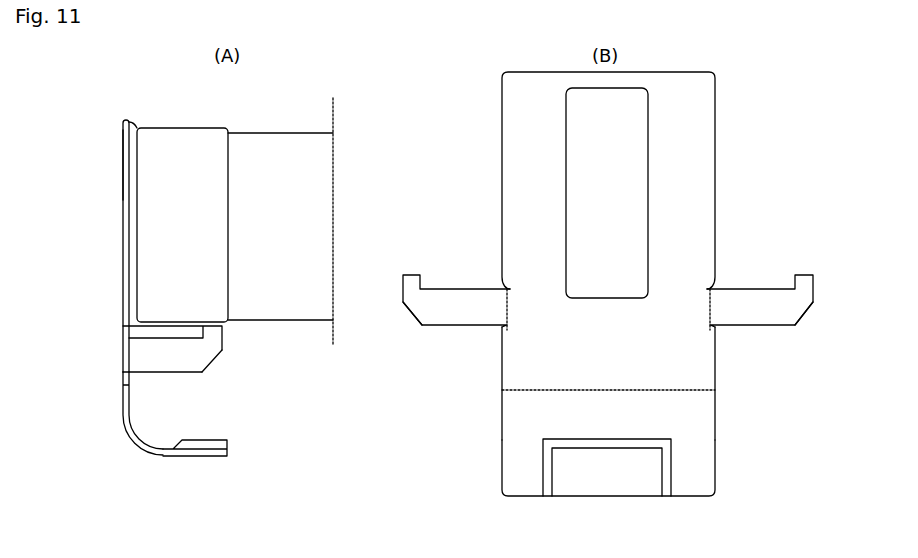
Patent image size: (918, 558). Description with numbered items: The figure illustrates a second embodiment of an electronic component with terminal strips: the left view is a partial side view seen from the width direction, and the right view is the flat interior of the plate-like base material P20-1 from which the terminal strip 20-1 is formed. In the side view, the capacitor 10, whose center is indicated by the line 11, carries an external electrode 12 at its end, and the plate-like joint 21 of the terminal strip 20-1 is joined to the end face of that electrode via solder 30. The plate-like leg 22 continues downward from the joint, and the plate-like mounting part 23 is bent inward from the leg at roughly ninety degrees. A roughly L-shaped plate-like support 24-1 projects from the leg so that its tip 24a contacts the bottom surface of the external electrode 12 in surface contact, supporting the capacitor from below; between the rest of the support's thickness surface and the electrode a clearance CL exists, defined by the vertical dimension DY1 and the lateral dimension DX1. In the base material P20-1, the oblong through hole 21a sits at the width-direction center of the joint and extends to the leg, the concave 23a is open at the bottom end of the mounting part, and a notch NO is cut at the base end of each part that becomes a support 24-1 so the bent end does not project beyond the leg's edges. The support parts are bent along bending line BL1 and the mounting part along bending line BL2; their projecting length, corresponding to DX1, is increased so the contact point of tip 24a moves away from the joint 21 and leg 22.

The multilayer ceramic capacitor 10 is at (262, 133).
The center line of substrate 11 is at (308, 147).
The external electrode 12 is at (178, 138).
The terminal strip 20-1 is at (122, 165).
The plate-like base material P20-1 is at (501, 118).
The plate-like joint 21 is at (122, 222).
The oblong through hole 21a is at (640, 188).
The plate-like leg 22 is at (122, 400).
The plate-like mounting part 23 is at (200, 458).
The concave 23a is at (607, 480).
The plate-like support 24-1 is at (132, 352).
The tip 24a is at (212, 332).
The solder 30 is at (137, 127).
The clearance CL is at (207, 370).
The lateral dimension DX1 is at (203, 337).
The vertical dimension DY1 is at (123, 338).
The notch NO is at (507, 328).
The bending line BL1 is at (505, 307).
The bending line BL2 is at (545, 390).